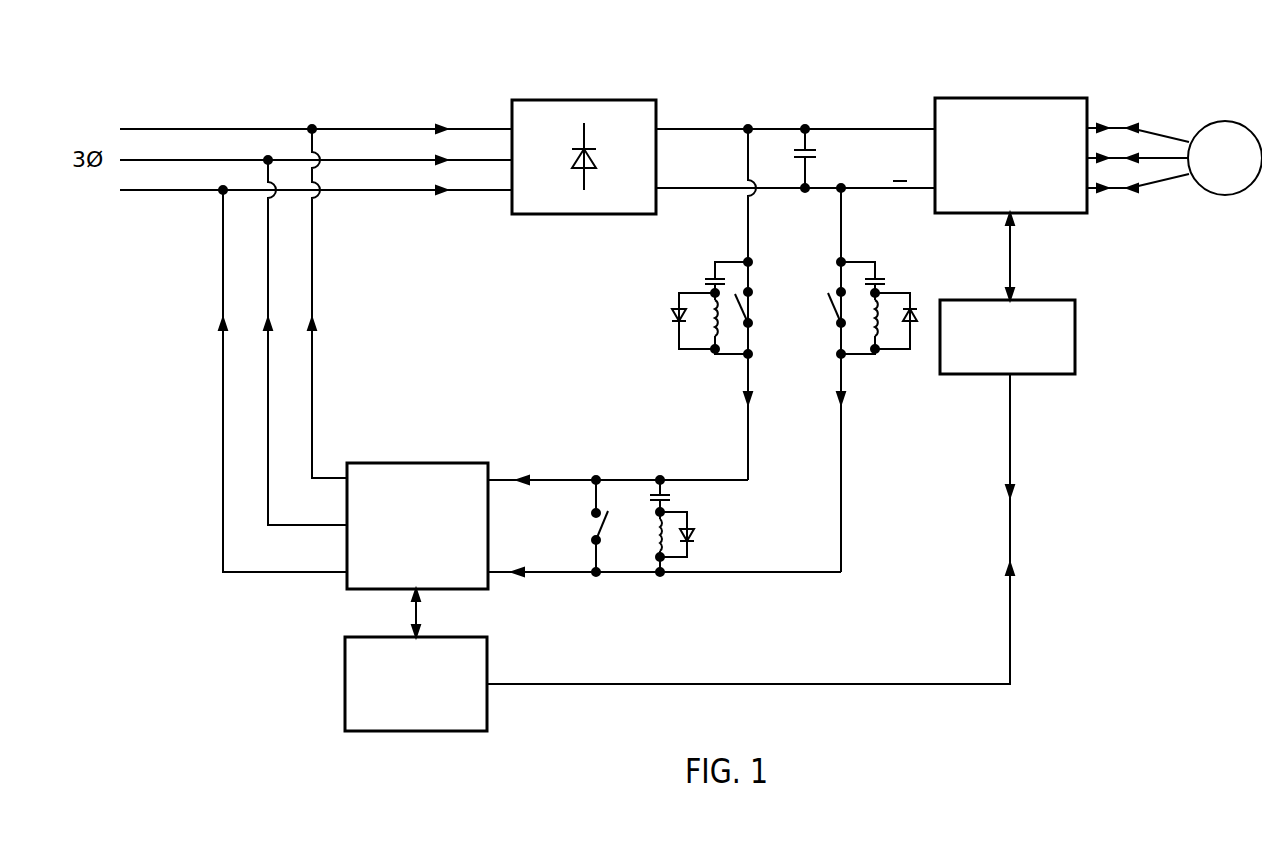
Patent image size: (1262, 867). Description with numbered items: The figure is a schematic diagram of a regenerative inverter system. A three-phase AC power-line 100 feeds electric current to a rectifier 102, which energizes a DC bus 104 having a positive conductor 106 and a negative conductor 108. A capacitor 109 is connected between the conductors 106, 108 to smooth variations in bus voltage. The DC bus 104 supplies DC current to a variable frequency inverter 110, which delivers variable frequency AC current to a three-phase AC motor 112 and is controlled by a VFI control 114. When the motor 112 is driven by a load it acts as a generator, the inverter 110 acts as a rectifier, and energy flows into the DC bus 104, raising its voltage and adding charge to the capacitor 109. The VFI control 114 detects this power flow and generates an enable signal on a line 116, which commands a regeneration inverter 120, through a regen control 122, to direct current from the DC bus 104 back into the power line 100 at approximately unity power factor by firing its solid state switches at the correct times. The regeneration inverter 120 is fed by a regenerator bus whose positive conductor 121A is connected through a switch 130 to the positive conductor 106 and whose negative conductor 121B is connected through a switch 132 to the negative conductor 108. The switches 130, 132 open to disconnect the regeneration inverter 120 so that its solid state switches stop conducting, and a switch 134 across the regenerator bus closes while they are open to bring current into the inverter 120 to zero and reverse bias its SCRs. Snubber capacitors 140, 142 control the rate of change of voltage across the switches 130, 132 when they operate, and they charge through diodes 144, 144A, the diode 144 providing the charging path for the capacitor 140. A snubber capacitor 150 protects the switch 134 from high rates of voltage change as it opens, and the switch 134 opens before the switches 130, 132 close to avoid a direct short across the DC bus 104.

The 3 phase AC power-line 100 is at (245, 104).
The rectifier 102 is at (602, 100).
The DC bus 104 is at (787, 97).
The positive conductor 106 is at (883, 128).
The negative conductor 108 is at (872, 189).
The capacitor 109 is at (814, 143).
The variable frequency inverter 110 is at (1046, 97).
The 3 phase AC motor 112 is at (1228, 121).
The VFI control 114 is at (1075, 330).
The line 116 is at (1010, 440).
The regeneration inverter 120 is at (401, 463).
The positive conductor 121A is at (540, 479).
The negative conductor 121B is at (571, 574).
The regen control 122 is at (345, 677).
The switch 130 is at (750, 324).
The switch 132 is at (850, 310).
The switch 134 is at (590, 529).
The snubber capacitor 140 is at (713, 275).
The snubber capacitor 142 is at (877, 277).
The diode 144 is at (676, 313).
The diode 144A is at (913, 318).
The snubber capacitor 150 is at (676, 493).